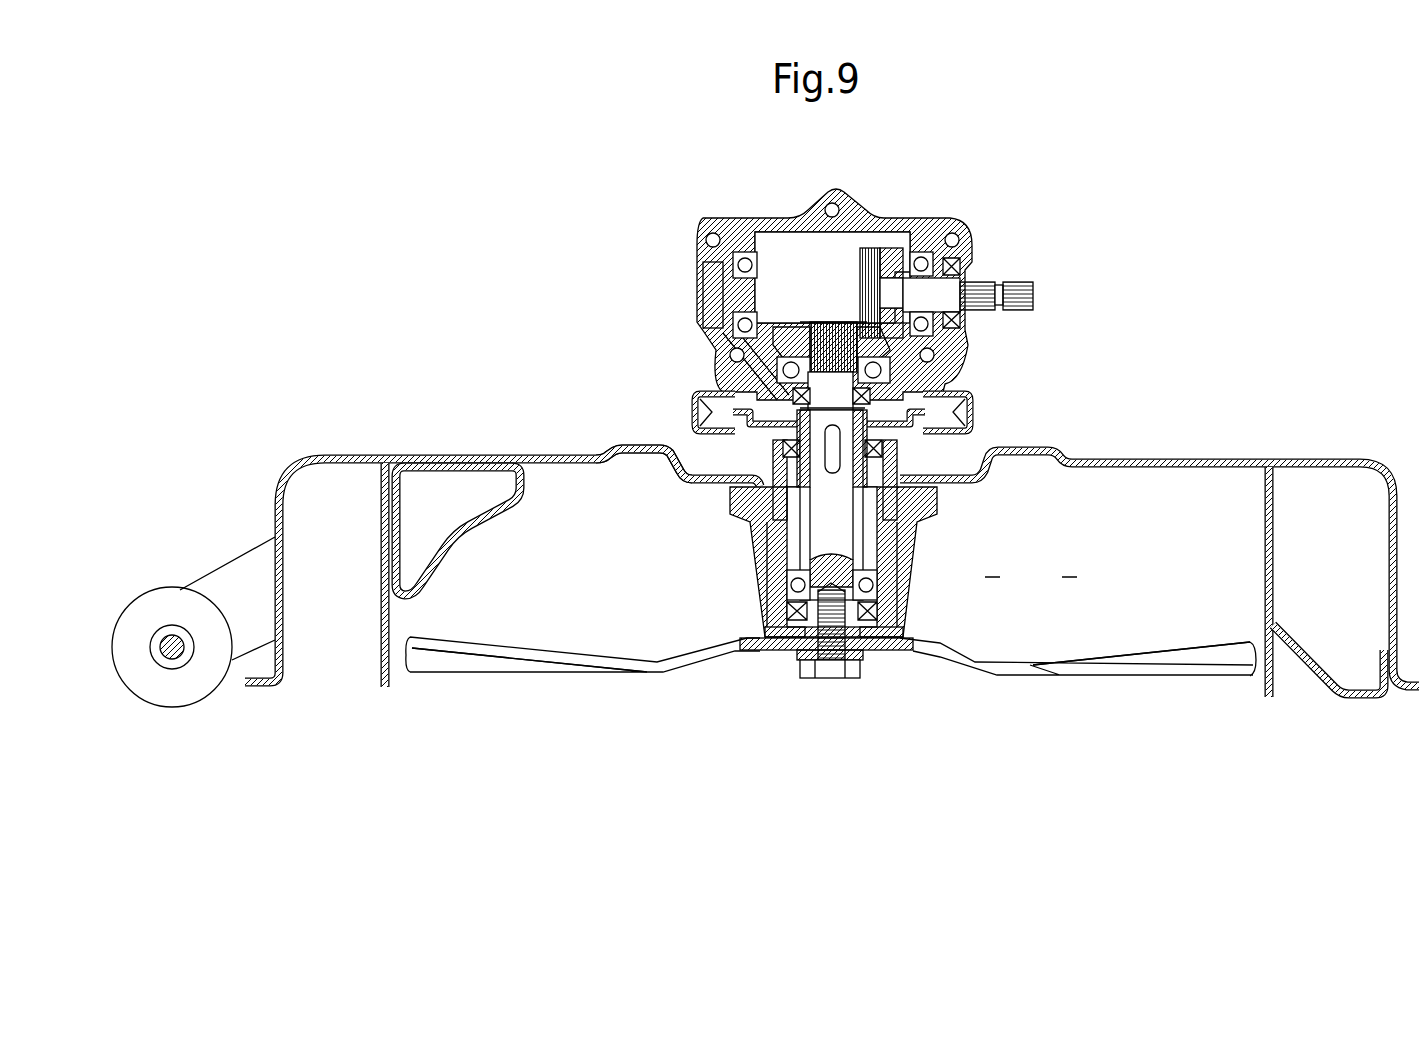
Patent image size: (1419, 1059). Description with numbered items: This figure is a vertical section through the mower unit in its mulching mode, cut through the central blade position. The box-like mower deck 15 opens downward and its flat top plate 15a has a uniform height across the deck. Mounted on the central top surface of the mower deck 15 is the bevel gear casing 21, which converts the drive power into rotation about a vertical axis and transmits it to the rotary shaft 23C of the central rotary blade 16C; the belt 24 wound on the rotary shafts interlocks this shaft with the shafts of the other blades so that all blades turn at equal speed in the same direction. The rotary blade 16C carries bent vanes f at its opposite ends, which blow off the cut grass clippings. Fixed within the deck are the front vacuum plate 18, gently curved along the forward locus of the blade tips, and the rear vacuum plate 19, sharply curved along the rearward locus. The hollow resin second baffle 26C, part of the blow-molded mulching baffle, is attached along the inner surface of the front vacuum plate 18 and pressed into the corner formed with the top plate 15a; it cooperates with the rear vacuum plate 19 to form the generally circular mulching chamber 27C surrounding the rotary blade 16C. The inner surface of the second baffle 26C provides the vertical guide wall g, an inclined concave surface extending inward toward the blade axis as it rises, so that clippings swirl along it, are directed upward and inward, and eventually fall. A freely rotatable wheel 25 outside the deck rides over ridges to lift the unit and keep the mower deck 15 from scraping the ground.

The mower deck 15 is at (322, 455).
The top plate 15a is at (586, 466).
The rotary blade (center) 16C is at (687, 664).
The front vacuum plate 18 is at (380, 617).
The rear vacuum plate 19 is at (1265, 540).
The bevel gear casing 21 is at (882, 218).
The rotary shaft 23C is at (823, 538).
The belt 24 is at (967, 412).
The freely rotatable wheel 25 is at (162, 600).
The second baffle 26C is at (417, 592).
The mulching chamber 27C is at (1031, 580).
The bent vane f is at (463, 642).
The vertical guide wall g is at (460, 529).